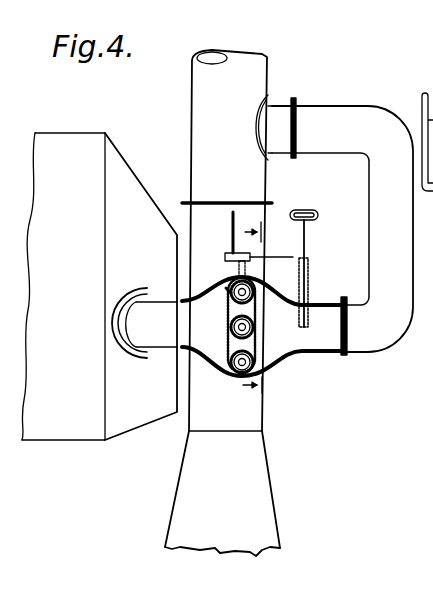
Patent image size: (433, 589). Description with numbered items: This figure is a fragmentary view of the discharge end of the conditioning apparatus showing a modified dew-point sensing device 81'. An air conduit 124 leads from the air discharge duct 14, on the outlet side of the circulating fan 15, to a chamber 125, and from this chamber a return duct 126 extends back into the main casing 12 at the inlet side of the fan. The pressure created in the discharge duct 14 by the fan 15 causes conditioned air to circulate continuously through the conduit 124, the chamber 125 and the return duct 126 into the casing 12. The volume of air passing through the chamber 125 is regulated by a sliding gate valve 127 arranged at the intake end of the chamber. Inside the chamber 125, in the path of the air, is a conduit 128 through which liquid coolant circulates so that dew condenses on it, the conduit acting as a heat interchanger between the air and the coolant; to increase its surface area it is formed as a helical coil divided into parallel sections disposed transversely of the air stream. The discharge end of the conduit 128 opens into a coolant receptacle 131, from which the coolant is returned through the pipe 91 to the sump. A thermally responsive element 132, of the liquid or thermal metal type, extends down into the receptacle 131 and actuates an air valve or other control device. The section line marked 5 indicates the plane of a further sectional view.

The main casing 12 is at (66, 147).
The air discharge duct 14 is at (205, 116).
The air conduit 124 is at (327, 120).
The dew-point sensing device 81' is at (241, 269).
The chamber 125 is at (217, 380).
The conduit 128 is at (229, 338).
The coolant receptacle 131 is at (258, 345).
The thermally responsive element 132 is at (236, 270).
The pipe 91 is at (297, 283).
The sliding gate valve 127 is at (305, 328).
The return duct 126 is at (157, 335).
The circulating fan 15 is at (195, 421).
The section line 5- 5 is at (260, 311).